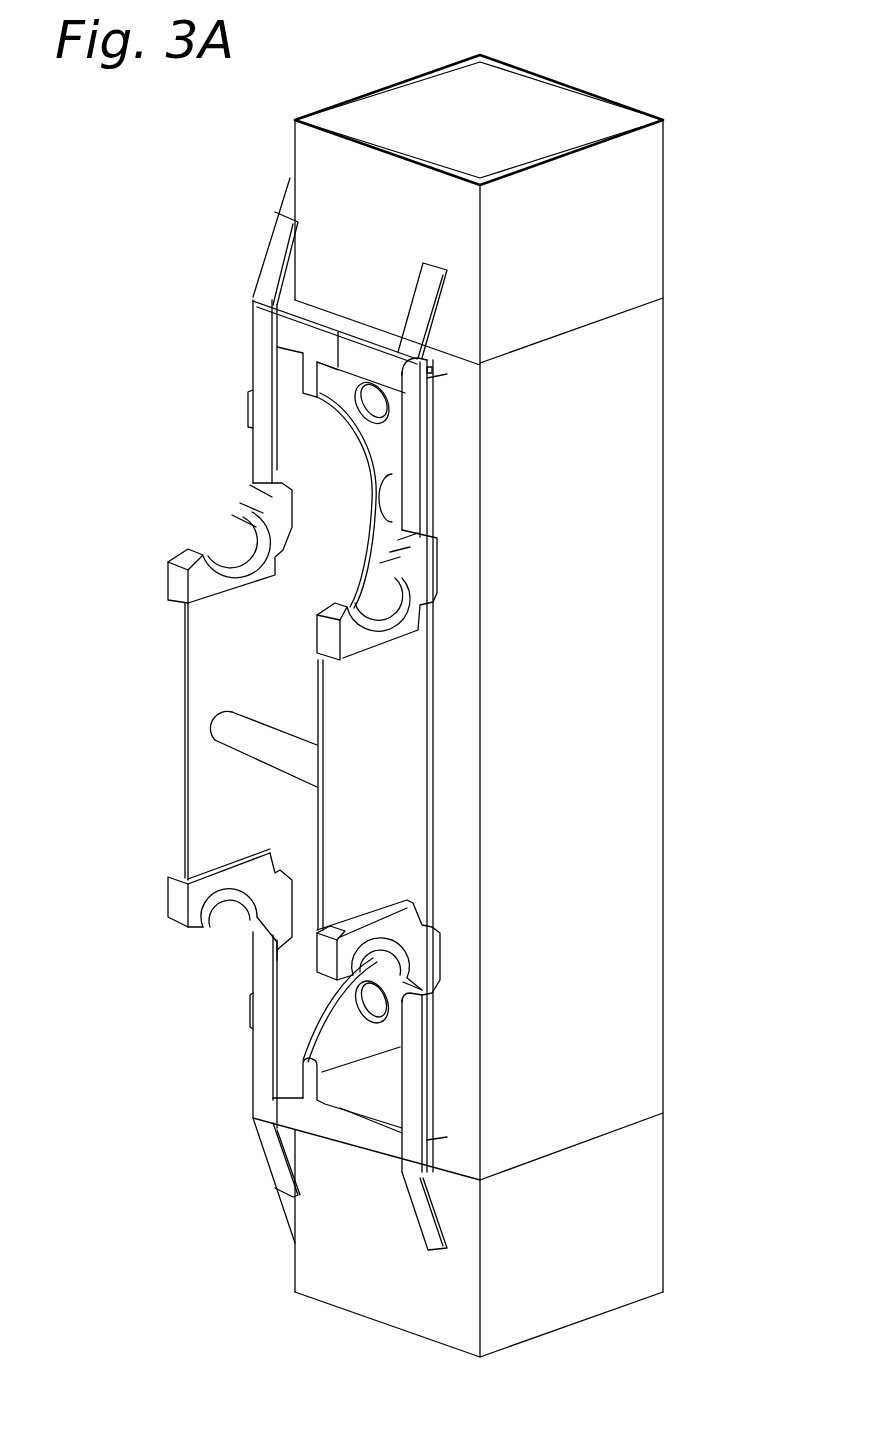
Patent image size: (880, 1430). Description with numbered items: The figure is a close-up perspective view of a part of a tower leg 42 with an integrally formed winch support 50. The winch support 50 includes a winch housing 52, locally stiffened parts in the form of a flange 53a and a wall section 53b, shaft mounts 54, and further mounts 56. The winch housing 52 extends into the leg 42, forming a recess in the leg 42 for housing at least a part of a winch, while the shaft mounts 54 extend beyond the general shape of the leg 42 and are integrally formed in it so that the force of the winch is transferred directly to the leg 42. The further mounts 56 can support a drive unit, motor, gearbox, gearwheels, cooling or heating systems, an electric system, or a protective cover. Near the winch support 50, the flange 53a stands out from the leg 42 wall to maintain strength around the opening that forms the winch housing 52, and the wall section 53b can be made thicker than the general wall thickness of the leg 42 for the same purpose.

The tower leg 42 is at (608, 511).
The winch support 50 is at (123, 733).
The winch housing 52 is at (283, 795).
The flange 53a is at (278, 1158).
The wall section 53b is at (455, 673).
The shaft mount 54 is at (213, 533).
The further mount 56 is at (390, 502).